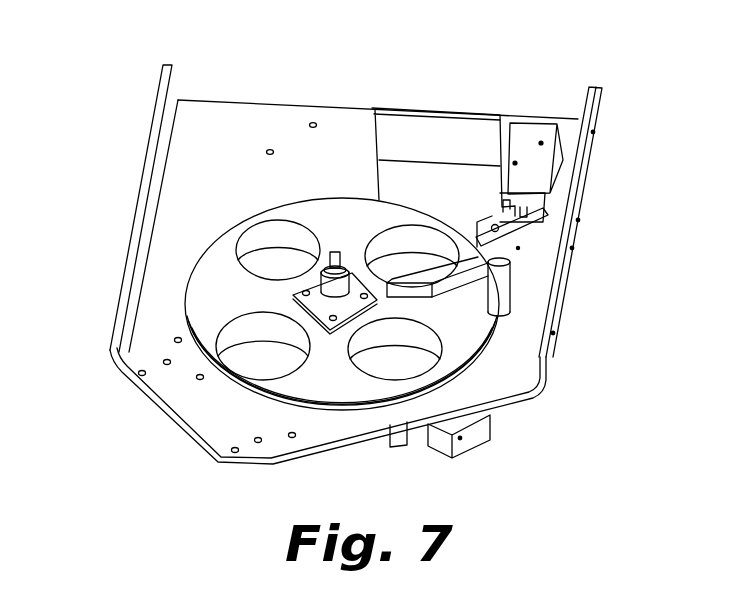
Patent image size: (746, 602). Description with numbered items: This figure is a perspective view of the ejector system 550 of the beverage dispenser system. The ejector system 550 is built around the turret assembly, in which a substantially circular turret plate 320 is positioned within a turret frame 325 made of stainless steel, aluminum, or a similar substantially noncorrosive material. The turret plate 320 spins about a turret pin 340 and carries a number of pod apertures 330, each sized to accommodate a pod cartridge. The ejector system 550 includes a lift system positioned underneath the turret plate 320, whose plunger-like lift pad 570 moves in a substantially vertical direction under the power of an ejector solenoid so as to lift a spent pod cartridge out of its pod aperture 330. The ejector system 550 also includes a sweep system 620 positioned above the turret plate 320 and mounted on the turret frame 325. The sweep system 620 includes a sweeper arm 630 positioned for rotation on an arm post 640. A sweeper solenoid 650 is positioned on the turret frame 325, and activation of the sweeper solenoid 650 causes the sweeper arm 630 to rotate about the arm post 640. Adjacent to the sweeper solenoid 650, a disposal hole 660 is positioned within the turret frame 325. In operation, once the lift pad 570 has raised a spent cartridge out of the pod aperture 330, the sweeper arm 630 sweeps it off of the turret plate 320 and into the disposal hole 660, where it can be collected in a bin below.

The ejector system 550 is at (85, 45).
The turret frame 325 is at (145, 172).
The turret plate 320 is at (188, 266).
The pod apertures 330 is at (255, 237).
The turret pin 340 is at (335, 250).
The lift pad 570 is at (402, 250).
The disposal hole 660 is at (437, 187).
The sweeper solenoid 650 is at (558, 170).
The sweep system 620 is at (513, 277).
The arm post 640 is at (510, 298).
The sweeper arm 630 is at (458, 296).